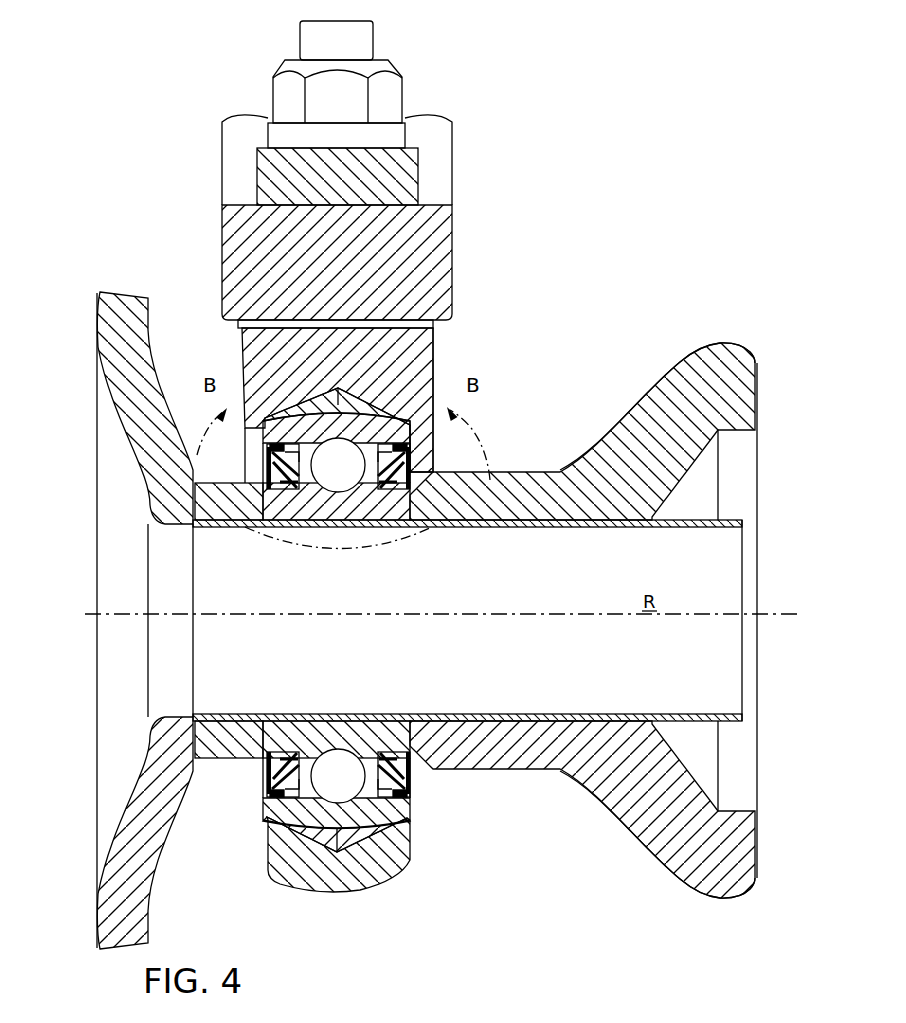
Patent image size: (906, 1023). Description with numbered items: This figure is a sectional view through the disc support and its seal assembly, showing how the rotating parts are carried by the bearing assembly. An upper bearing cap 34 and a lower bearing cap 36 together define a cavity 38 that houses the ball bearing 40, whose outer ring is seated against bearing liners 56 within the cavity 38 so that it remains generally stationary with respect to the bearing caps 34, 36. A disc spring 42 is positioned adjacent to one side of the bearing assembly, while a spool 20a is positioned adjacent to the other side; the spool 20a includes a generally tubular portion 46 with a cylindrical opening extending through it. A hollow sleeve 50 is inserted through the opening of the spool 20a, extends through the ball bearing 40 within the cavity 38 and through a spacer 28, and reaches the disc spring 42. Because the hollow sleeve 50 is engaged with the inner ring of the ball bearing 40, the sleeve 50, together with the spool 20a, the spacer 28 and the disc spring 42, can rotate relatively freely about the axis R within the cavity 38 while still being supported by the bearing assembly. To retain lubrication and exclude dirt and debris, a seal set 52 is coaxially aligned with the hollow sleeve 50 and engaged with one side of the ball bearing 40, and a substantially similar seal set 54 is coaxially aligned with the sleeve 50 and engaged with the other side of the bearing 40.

The spool 20a is at (540, 465).
The spacer 28 is at (240, 735).
The upper bearing cap 34 is at (267, 353).
The lower bearing cap 36 is at (358, 880).
The cavity 38 is at (440, 430).
The ball bearing 40 is at (357, 817).
The disc spring 42 is at (107, 284).
The generally tubular portion 46 is at (606, 422).
The hollow sleeve 50 is at (665, 523).
The seal set 52 is at (423, 466).
The seal set 54 is at (248, 470).
The bearing liners 56 is at (300, 405).